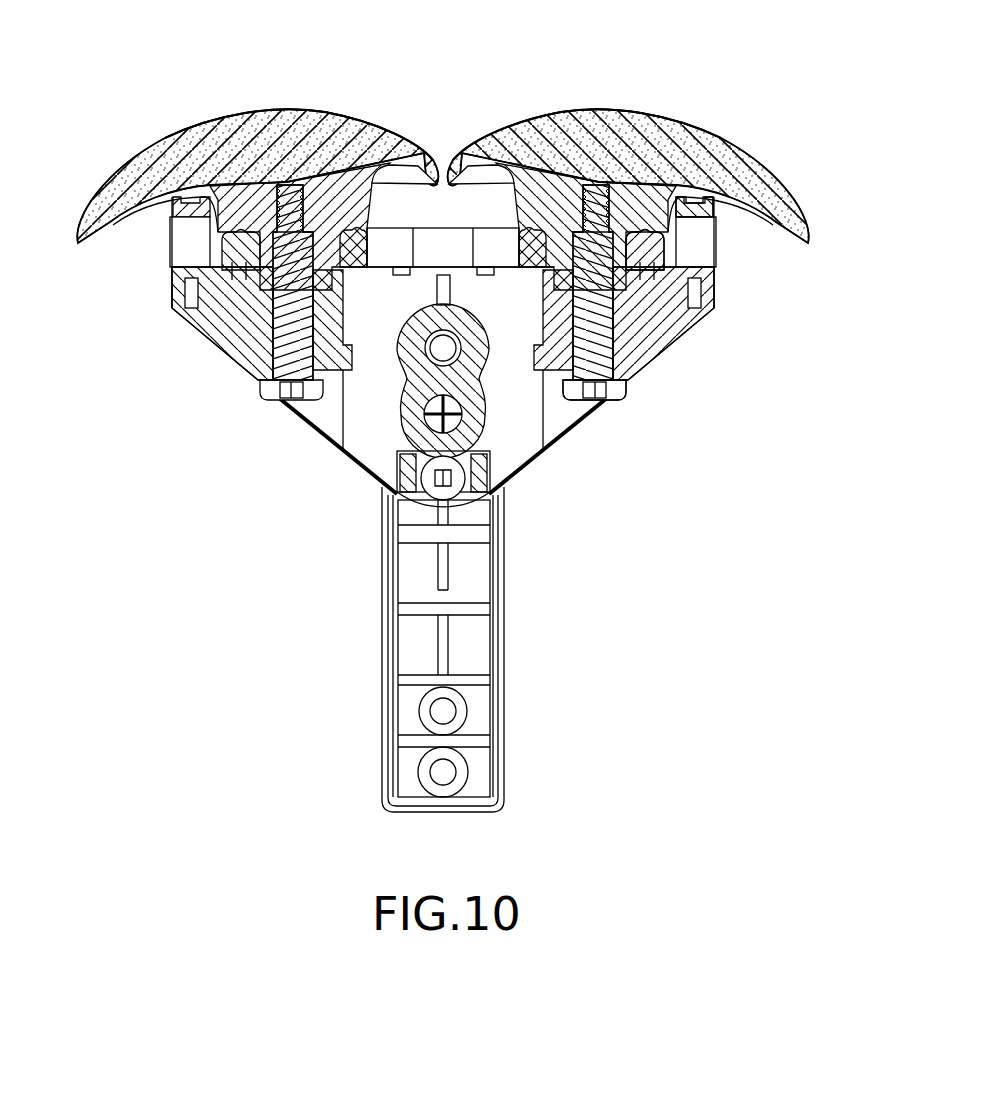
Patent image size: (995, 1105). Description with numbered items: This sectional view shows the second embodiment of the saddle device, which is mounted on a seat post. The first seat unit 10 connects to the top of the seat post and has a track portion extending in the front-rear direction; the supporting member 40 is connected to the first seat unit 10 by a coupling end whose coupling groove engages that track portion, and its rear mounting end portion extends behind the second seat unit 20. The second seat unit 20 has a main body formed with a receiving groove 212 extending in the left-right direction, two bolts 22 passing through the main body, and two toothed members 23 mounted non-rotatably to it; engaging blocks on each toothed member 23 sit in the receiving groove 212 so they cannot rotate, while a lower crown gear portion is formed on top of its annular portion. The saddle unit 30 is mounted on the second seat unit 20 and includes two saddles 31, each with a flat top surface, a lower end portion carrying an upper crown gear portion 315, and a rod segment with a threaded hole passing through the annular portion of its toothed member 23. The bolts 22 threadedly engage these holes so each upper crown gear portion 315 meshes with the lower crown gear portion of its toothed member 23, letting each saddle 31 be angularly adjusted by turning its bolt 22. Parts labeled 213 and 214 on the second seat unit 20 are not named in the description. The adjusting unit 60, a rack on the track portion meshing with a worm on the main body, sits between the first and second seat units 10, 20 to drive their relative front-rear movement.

The saddle unit 30 is at (318, 102).
The saddle 31 is at (268, 108).
The receiving groove 212 is at (390, 308).
The upper crown gear portion 315 is at (652, 236).
The toothed member 23 is at (651, 252).
The support block 213 is at (248, 318).
The bolt 214 is at (257, 358).
The bolt 22 is at (606, 370).
The second seat unit 20 is at (562, 449).
The first seat unit 10 is at (398, 422).
The adjusting unit 60 is at (418, 474).
The supporting member 40 is at (508, 743).